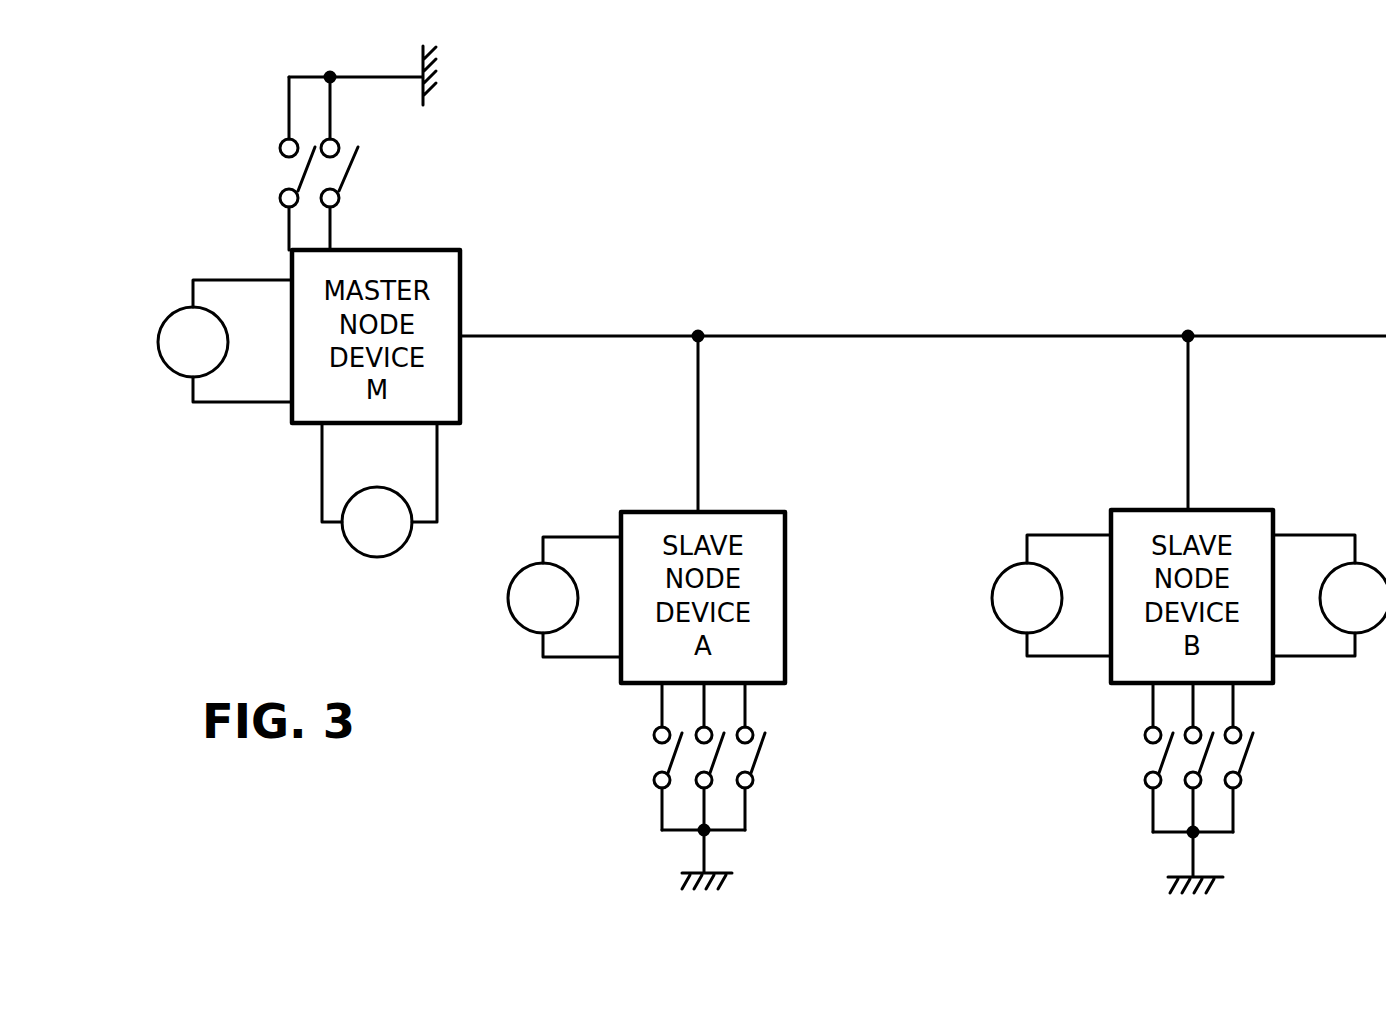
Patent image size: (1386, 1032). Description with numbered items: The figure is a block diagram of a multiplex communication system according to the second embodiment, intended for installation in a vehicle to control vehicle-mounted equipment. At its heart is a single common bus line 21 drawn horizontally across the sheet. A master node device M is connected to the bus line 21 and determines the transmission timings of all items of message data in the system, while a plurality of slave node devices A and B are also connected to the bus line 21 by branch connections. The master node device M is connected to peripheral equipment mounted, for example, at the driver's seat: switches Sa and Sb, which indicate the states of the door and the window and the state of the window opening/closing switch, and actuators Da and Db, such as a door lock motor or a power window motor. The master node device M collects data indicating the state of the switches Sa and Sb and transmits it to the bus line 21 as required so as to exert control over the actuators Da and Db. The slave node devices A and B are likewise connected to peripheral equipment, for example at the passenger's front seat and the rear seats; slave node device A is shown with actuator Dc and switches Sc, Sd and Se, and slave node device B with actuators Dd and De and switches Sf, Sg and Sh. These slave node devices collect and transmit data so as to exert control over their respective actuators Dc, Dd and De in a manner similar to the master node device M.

The bus line 21 is at (612, 335).
The switch Sa is at (300, 176).
The switch Sb is at (346, 175).
The switch Sc is at (668, 752).
The switch Sd is at (722, 763).
The switch Se is at (763, 752).
The switch Sf is at (1157, 758).
The switch Sg is at (1202, 767).
The switch Sh is at (1252, 758).
The actuator Da is at (225, 341).
The actuator Db is at (379, 490).
The actuator Dc is at (564, 597).
The actuator Dd is at (1051, 595).
The actuator De is at (1329, 595).